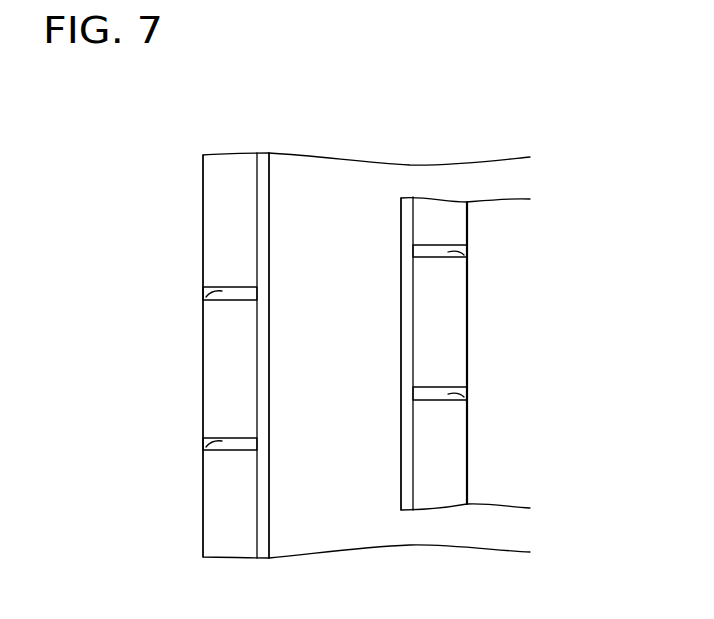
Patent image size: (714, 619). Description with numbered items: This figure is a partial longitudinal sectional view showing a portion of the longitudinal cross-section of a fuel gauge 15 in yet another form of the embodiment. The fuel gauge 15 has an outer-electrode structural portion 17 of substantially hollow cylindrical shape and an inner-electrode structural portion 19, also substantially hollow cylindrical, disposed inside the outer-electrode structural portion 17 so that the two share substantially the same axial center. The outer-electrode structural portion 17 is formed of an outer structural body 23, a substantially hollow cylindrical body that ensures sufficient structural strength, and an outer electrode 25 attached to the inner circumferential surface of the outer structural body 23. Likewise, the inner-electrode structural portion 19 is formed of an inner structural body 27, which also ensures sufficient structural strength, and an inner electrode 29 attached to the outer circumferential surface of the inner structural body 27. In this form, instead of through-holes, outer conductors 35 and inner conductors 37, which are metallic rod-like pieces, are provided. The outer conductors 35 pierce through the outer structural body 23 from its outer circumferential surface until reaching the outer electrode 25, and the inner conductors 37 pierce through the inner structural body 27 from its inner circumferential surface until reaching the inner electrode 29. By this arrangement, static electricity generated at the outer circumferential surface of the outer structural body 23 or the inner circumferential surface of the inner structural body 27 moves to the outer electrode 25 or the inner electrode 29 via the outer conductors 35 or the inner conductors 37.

The fuel gauge 15 is at (515, 105).
The outer-electrode structural portion 17 is at (232, 301).
The inner-electrode structural portion 19 is at (443, 297).
The outer structural body 23 is at (203, 195).
The outer electrode 25 is at (270, 205).
The inner structural body 27 is at (467, 348).
The inner electrode 29 is at (401, 345).
The outer conductors 35 is at (210, 297).
The inner conductors 37 is at (467, 250).